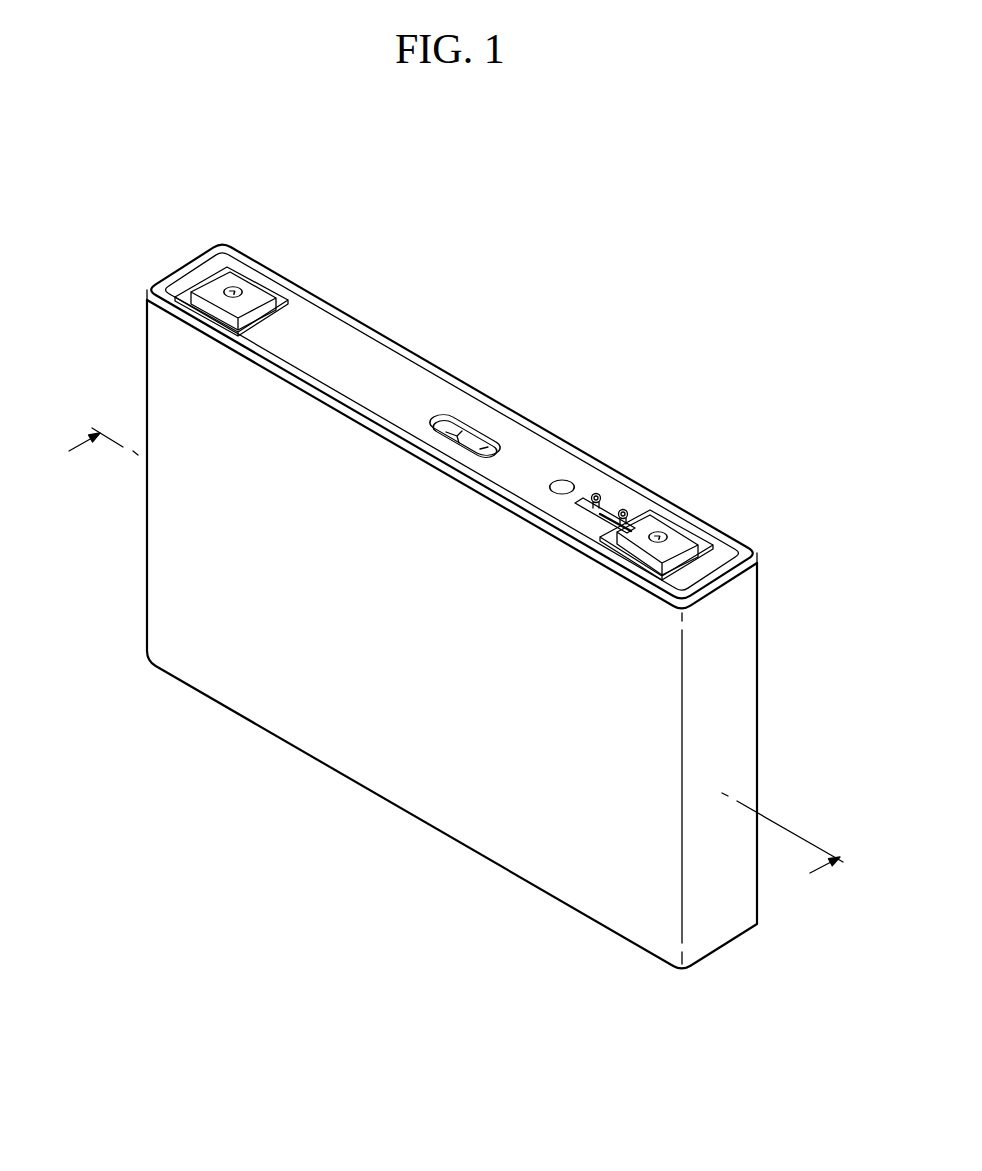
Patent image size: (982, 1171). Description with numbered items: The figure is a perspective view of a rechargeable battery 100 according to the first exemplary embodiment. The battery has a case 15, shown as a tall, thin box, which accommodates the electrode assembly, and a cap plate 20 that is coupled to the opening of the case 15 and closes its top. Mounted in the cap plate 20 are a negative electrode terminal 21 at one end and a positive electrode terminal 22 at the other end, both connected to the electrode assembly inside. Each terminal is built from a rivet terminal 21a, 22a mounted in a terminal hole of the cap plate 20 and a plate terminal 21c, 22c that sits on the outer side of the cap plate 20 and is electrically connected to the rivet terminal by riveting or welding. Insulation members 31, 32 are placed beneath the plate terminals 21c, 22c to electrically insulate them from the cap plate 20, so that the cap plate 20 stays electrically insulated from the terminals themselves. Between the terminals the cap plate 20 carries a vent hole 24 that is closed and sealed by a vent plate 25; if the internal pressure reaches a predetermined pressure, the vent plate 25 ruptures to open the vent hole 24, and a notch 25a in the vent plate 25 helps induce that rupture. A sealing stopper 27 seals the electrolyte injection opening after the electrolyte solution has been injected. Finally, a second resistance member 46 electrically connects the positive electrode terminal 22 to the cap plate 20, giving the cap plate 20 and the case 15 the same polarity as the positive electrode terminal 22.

The rechargeable battery 100 is at (540, 270).
The case 15 is at (375, 752).
The cap plate 20 is at (362, 362).
The negative electrode terminal 21 is at (239, 272).
The rivet terminal 21a is at (232, 287).
The plate terminal 21c is at (264, 290).
The insulation member 31 is at (287, 301).
The positive electrode terminal 22 is at (665, 515).
The rivet terminal 22a is at (668, 537).
The plate terminal 22c is at (672, 546).
The insulation member 32 is at (680, 568).
The vent hole 24 is at (448, 421).
The vent plate 25 is at (470, 432).
The notch 25a is at (478, 452).
The sealing stopper 27 is at (563, 488).
The second resistance member 46 is at (612, 508).